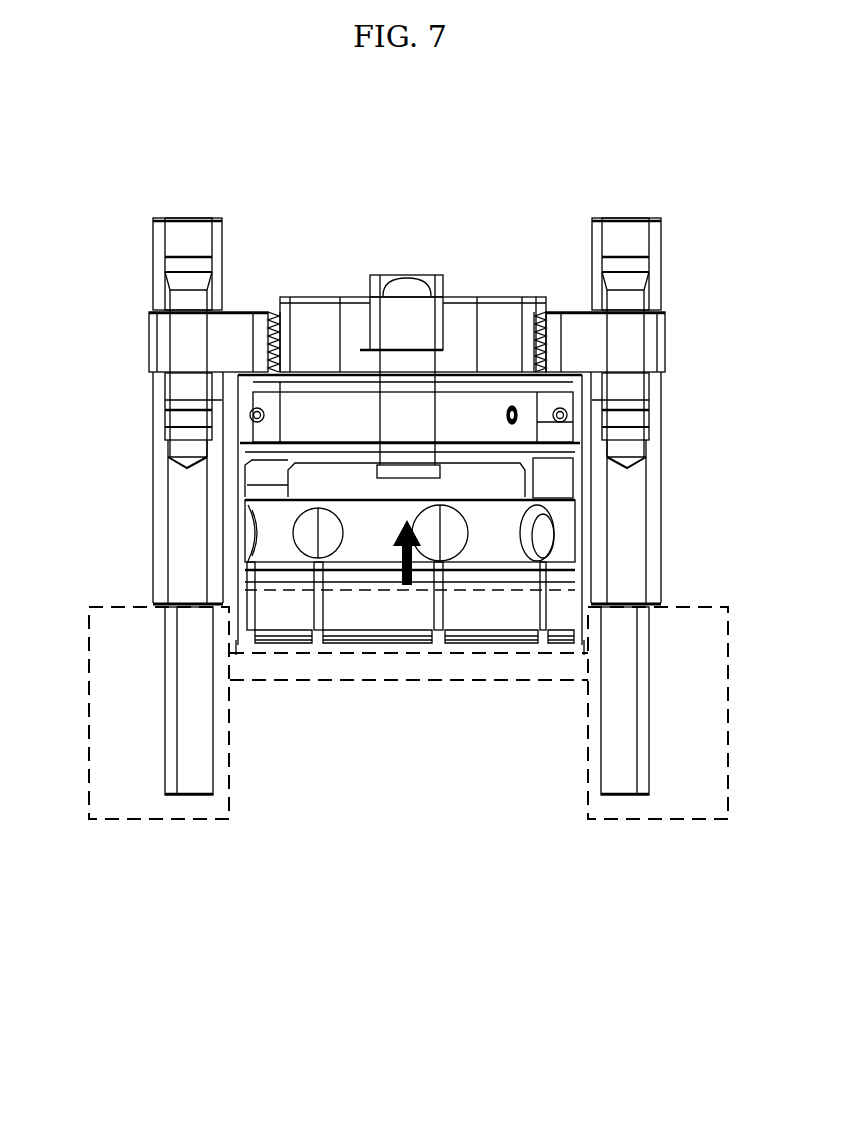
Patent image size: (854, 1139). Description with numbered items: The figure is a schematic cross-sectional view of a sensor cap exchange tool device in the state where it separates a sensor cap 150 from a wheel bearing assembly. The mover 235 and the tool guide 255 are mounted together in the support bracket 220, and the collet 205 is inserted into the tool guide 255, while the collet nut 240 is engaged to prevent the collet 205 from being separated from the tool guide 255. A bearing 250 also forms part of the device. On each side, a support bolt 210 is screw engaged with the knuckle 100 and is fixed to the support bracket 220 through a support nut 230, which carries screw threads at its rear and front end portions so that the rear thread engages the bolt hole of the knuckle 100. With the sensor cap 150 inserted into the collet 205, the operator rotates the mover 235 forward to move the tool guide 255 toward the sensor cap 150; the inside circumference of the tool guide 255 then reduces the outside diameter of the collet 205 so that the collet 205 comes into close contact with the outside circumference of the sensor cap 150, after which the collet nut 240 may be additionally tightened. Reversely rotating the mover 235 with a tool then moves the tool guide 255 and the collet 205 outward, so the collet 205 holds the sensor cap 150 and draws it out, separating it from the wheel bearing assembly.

The knuckle 100 is at (133, 782).
The sensor cap 150 is at (373, 674).
The collet 205 is at (487, 545).
The support bolt 210 is at (190, 553).
The support bracket 220 is at (233, 348).
The support nut 230 is at (158, 244).
The mover 235 is at (283, 332).
The collet nut 240 is at (437, 290).
The bearing 250 is at (565, 410).
The tool guide 255 is at (245, 492).